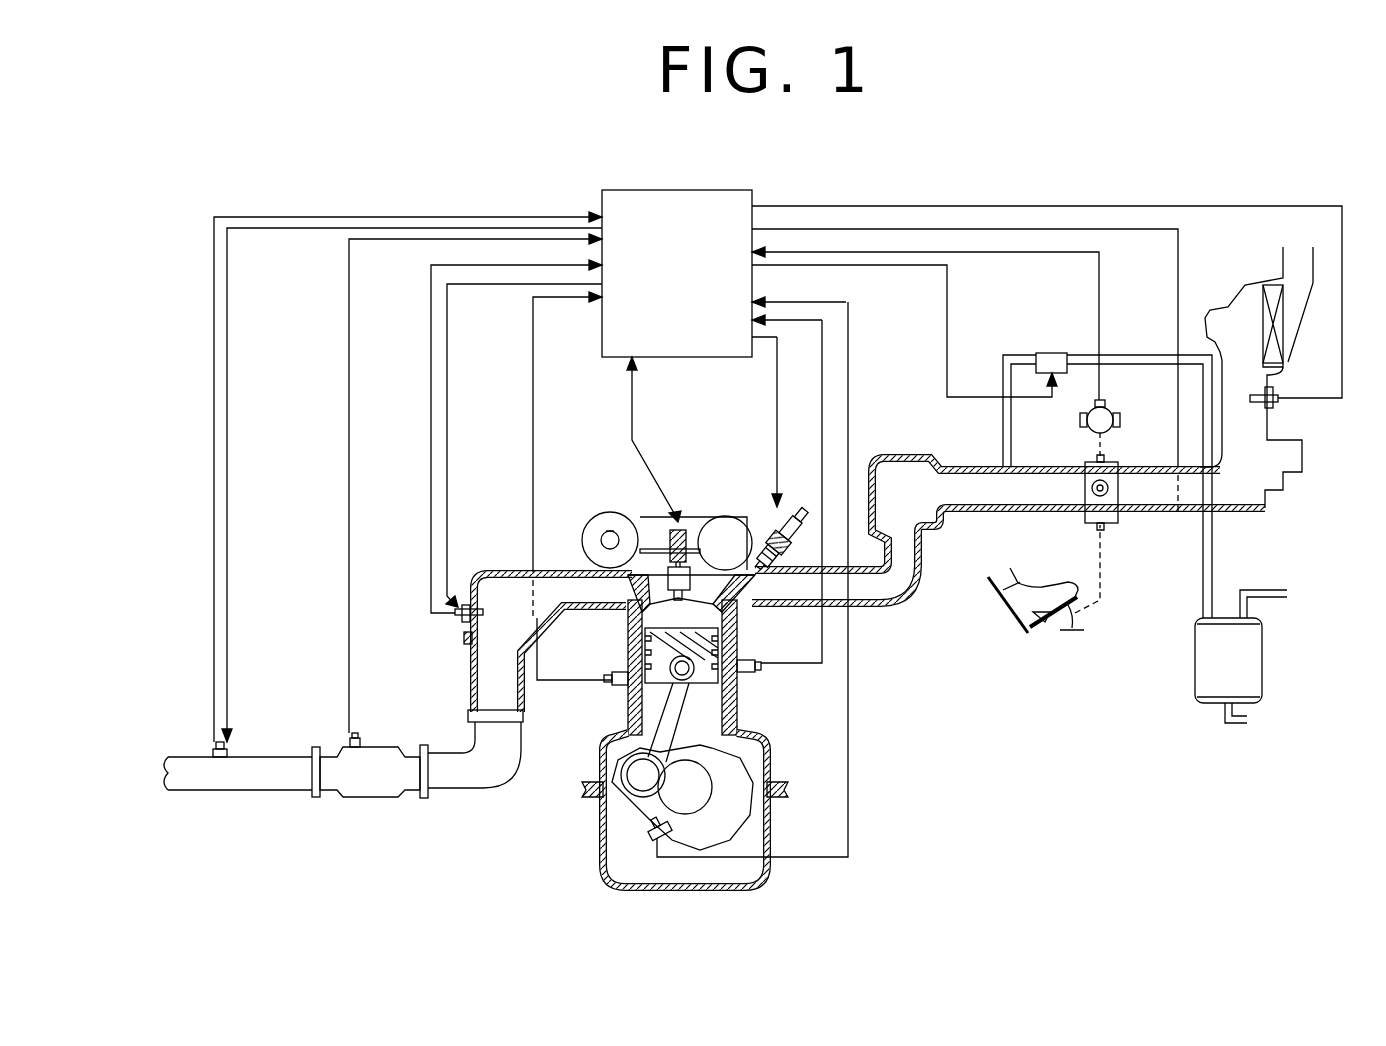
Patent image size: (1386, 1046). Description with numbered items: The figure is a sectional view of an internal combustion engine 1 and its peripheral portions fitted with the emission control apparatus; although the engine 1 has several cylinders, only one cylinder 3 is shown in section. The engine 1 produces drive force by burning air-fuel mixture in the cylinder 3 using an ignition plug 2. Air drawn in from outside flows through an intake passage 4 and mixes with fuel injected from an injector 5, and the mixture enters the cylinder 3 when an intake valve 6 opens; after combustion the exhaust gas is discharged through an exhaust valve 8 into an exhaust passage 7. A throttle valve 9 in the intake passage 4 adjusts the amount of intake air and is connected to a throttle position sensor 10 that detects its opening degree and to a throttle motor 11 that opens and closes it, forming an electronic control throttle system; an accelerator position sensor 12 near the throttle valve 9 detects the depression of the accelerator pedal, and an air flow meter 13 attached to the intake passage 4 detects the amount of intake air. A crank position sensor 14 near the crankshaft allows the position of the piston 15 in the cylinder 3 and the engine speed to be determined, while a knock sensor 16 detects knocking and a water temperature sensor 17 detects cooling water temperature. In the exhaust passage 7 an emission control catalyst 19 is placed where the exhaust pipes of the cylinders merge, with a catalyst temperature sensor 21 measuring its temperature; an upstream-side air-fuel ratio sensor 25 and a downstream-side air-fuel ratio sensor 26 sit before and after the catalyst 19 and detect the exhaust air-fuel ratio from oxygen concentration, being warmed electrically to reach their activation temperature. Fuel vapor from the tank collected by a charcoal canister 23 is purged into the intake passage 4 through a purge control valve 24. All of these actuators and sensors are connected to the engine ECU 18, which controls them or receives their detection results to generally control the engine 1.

The engine 1 is at (884, 733).
The ignition plug 2 is at (672, 540).
The cylinder 3 is at (632, 622).
The intake passage 4 is at (883, 585).
The injector 5 is at (775, 520).
The intake valve 6 is at (758, 600).
The exhaust passage 7 is at (487, 688).
The exhaust valve 8 is at (640, 592).
The throttle valve 9 is at (1082, 498).
The throttle position sensor 10 is at (1108, 412).
The throttle motor 11 is at (1114, 485).
The accelerator position sensor 12 is at (1103, 523).
The air flow meter 13 is at (1282, 406).
The crank position sensor 14 is at (646, 820).
The piston 15 is at (625, 712).
The knock sensor 16 is at (610, 688).
The water temperature sensor 17 is at (760, 688).
The engine ECU 18 is at (652, 195).
The emission control catalyst 19 is at (373, 793).
The catalyst temperature sensor 21 is at (348, 738).
The charcoal canister 23 is at (1247, 660).
The purge control valve 24 is at (1050, 352).
The upstream-side air-fuel ratio sensor 25 is at (462, 622).
The downstream-side air-fuel ratio sensor 26 is at (212, 750).